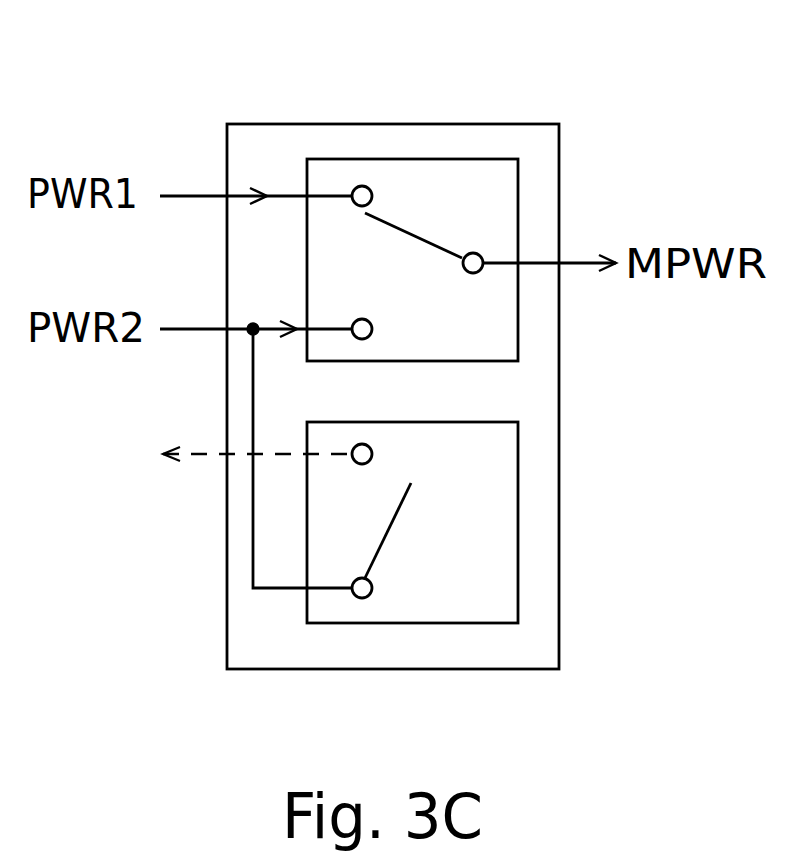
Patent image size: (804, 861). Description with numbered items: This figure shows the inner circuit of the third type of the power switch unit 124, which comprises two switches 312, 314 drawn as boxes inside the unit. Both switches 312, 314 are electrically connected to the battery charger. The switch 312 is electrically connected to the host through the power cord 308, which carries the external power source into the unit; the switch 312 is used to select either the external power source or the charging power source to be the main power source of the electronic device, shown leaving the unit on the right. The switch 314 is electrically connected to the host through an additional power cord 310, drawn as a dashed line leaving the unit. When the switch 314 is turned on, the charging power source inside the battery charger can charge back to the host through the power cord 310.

The power switch unit 124 is at (323, 124).
The power cord 308 is at (185, 195).
The additional power cord 310 is at (250, 455).
The switch 312 is at (438, 159).
The switch 314 is at (518, 470).